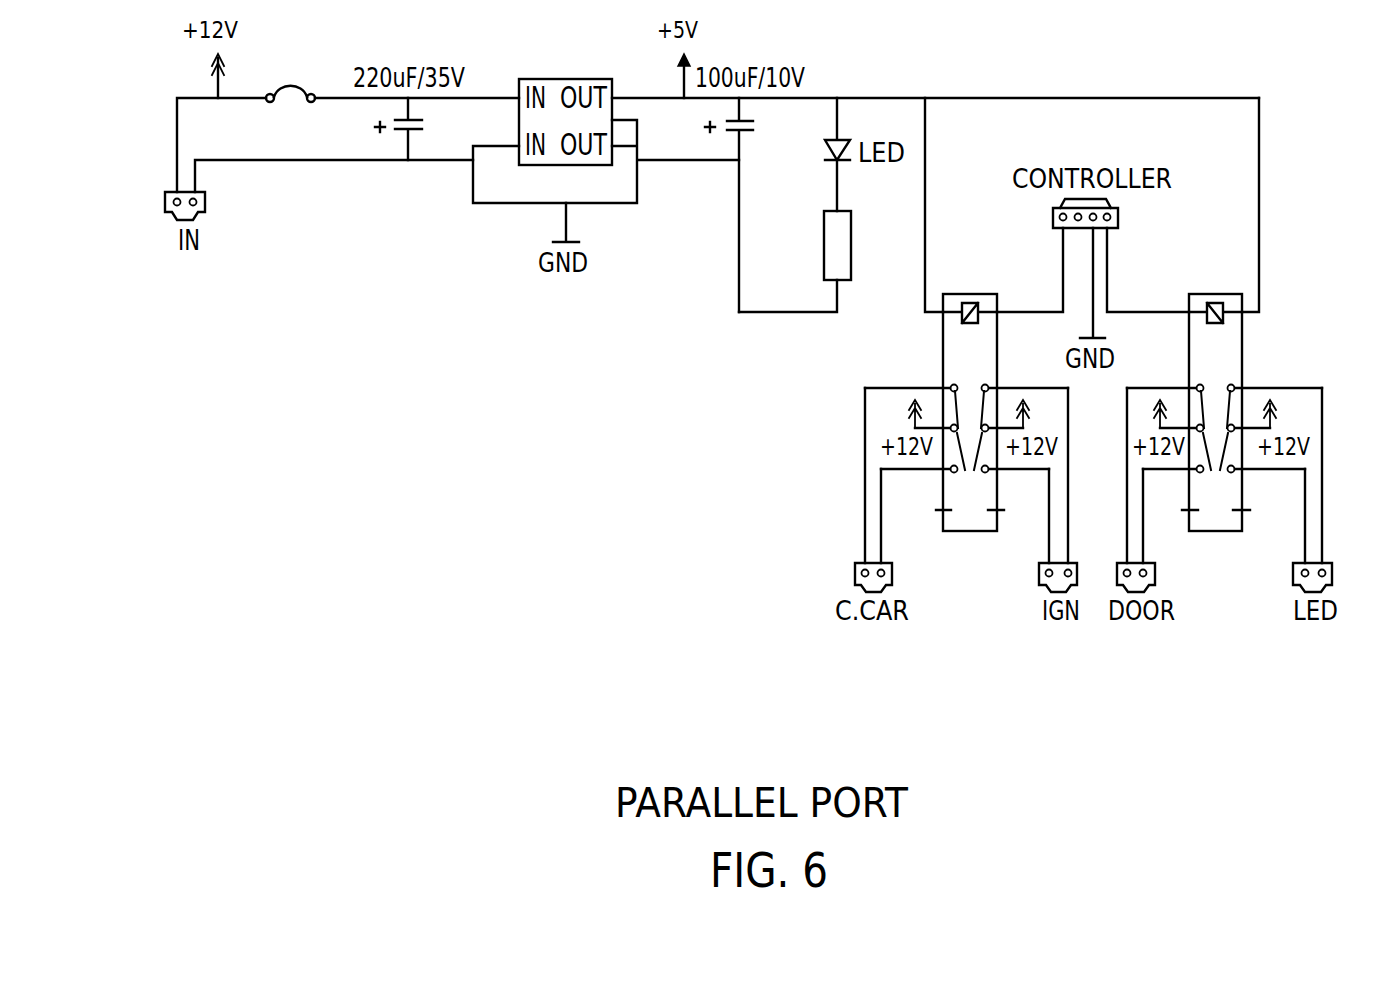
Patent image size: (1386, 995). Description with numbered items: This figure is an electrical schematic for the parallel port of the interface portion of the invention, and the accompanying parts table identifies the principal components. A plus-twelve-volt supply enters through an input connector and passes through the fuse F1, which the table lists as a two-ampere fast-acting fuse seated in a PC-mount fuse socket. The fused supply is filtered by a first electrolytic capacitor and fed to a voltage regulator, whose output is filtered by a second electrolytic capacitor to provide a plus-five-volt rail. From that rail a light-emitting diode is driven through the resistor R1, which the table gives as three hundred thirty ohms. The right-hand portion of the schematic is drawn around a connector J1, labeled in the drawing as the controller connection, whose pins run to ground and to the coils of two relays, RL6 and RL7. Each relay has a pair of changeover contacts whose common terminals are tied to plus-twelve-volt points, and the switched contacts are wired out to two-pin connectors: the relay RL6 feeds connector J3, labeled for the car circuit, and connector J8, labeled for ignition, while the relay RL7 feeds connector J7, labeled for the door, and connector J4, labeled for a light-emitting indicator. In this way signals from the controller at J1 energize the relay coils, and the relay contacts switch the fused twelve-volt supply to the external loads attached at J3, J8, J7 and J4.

The fuse F1 is at (290, 112).
The resistor R1 is at (821, 245).
The controller connector J1 is at (1100, 213).
The C.CAR connector J3 is at (856, 574).
The IGN connector J8 is at (1041, 574).
The DOOR connector J7 is at (1151, 574).
The LED connector J4 is at (1329, 574).
The relay RL6 is at (970, 429).
The relay RL7 is at (1216, 429).